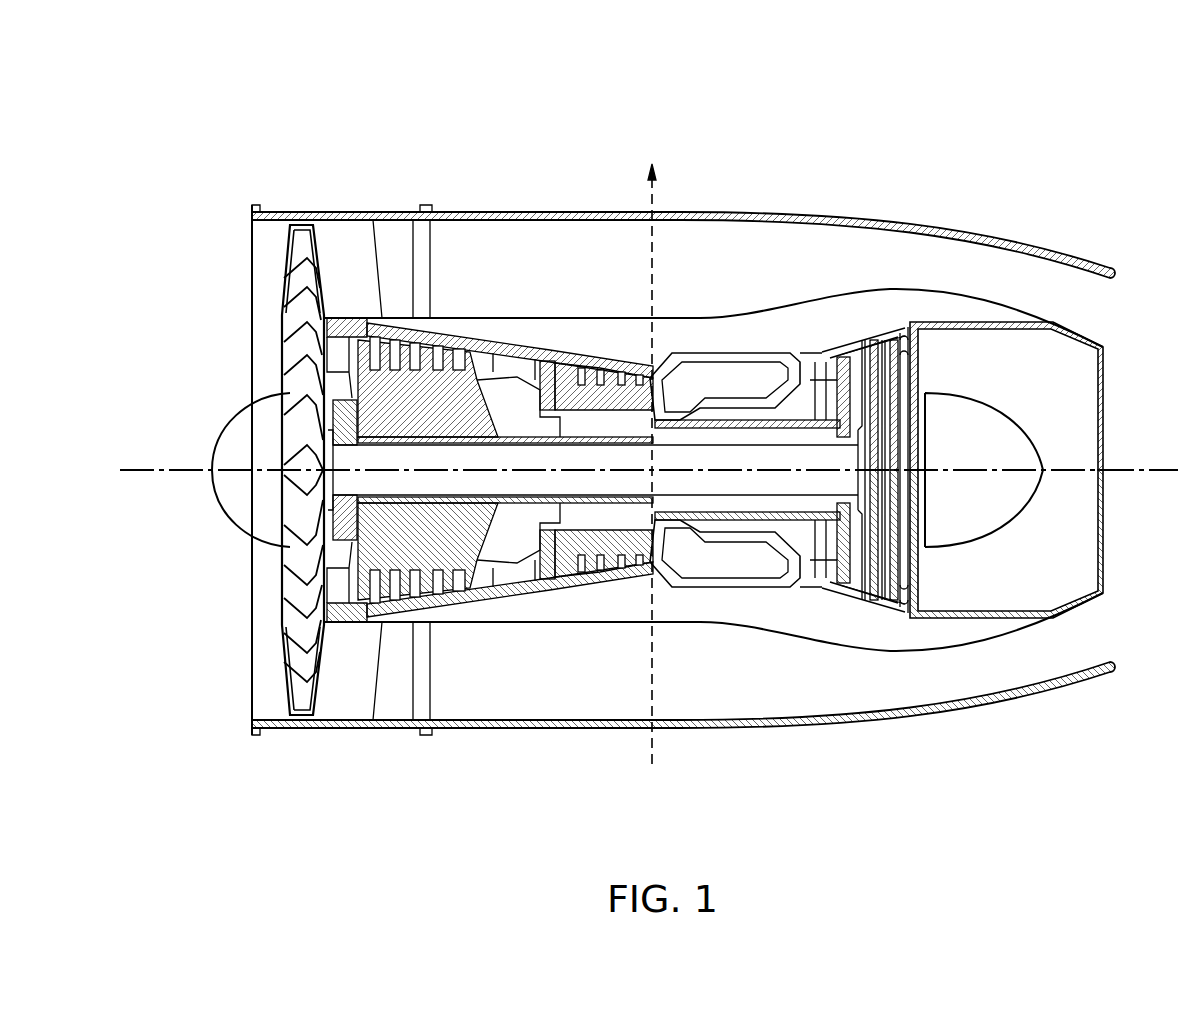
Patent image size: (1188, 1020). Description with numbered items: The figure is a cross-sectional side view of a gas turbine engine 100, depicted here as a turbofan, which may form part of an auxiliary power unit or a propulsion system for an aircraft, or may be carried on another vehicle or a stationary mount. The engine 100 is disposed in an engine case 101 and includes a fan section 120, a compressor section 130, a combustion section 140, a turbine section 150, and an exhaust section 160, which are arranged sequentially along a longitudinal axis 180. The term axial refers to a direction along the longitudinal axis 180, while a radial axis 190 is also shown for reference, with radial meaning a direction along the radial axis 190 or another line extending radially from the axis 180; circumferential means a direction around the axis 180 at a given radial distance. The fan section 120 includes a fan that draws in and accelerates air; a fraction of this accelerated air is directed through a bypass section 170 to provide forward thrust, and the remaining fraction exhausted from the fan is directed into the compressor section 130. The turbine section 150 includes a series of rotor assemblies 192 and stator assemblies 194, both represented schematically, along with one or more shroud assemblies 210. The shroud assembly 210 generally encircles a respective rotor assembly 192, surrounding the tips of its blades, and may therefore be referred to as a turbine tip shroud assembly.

The gas turbine engine 100 is at (486, 104).
The engine case 101 is at (491, 211).
The fan section 120 is at (335, 763).
The compressor section 130 is at (595, 763).
The combustion section 140 is at (758, 763).
The turbine section 150 is at (921, 763).
The exhaust section 160 is at (1050, 763).
The bypass section 170 is at (562, 238).
The longitudinal axis 180 is at (135, 470).
The radial axis 190 is at (652, 256).
The rotor assembly 192 is at (902, 372).
The stator assembly 194 is at (875, 336).
The shroud assembly 210 is at (887, 614).